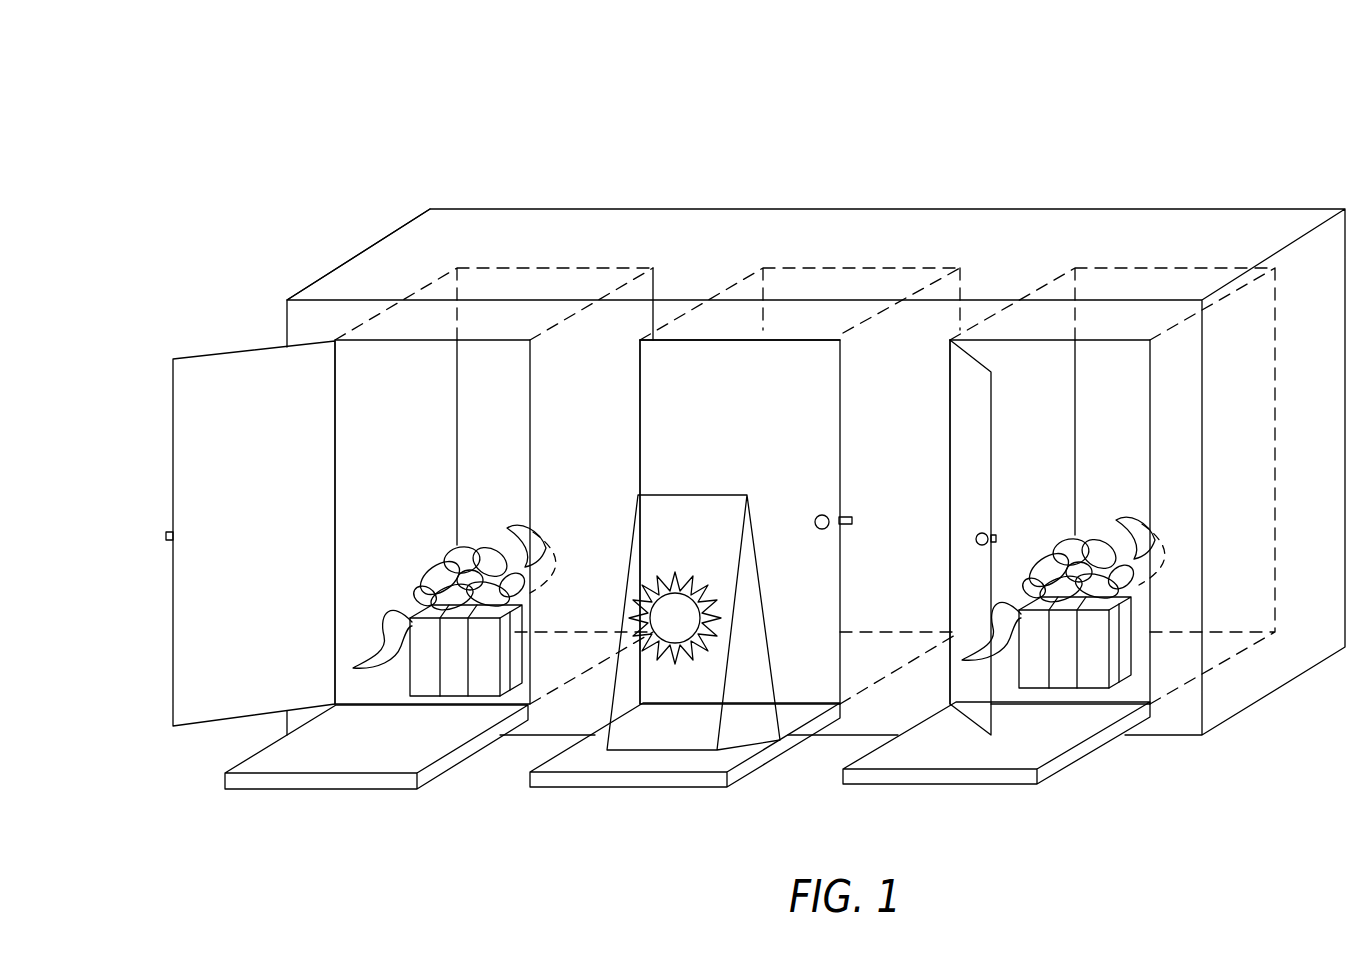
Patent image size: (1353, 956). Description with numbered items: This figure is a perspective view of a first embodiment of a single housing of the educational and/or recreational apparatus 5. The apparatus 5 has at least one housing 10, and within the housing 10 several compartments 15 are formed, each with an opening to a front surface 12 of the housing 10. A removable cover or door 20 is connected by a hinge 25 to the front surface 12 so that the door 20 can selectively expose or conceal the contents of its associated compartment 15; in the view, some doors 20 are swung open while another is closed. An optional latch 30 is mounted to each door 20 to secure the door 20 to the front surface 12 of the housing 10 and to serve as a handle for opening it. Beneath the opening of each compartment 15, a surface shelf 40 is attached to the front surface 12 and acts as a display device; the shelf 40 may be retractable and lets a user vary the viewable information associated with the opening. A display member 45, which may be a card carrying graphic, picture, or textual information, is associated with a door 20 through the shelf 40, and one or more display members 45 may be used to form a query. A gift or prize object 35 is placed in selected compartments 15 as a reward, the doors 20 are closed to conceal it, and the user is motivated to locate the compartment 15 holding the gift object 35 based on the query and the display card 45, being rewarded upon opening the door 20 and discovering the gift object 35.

The educational and/or recreational apparatus 5 is at (908, 84).
The housing 10 is at (917, 209).
The front surface 12 is at (297, 317).
The compartment 15 is at (480, 355).
The door 20 is at (197, 700).
The hinge 25 is at (333, 353).
The latch 30 is at (167, 536).
The gift object 35 is at (518, 697).
The surface shelf 40 is at (350, 790).
The display member 45 is at (625, 715).